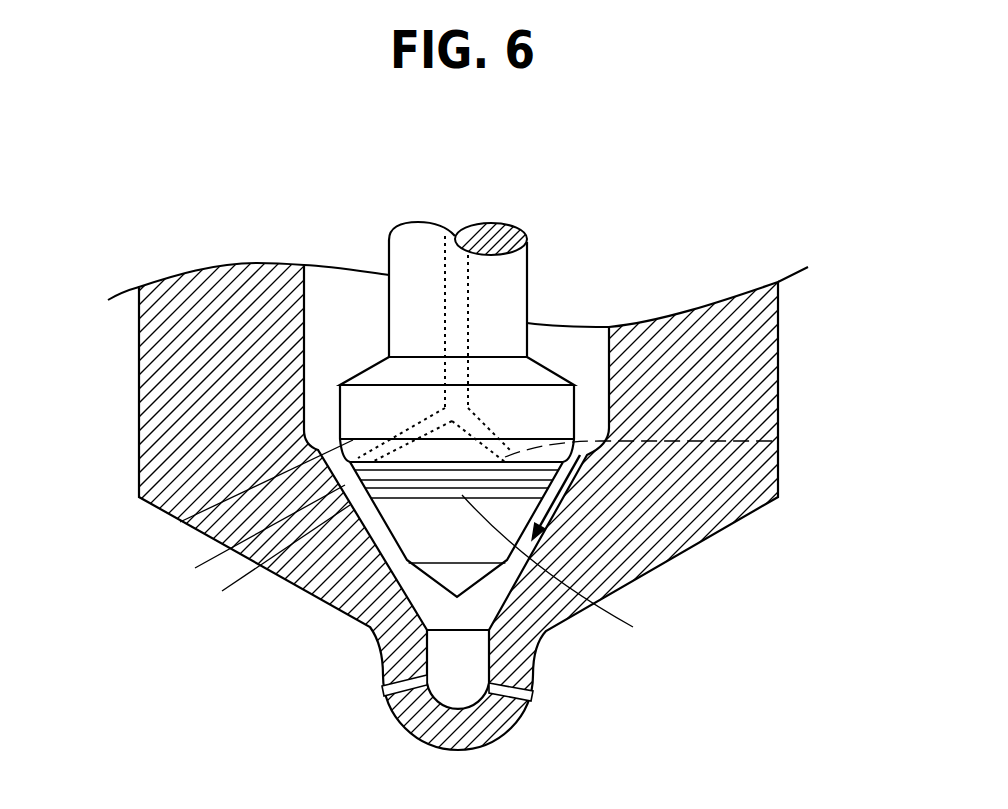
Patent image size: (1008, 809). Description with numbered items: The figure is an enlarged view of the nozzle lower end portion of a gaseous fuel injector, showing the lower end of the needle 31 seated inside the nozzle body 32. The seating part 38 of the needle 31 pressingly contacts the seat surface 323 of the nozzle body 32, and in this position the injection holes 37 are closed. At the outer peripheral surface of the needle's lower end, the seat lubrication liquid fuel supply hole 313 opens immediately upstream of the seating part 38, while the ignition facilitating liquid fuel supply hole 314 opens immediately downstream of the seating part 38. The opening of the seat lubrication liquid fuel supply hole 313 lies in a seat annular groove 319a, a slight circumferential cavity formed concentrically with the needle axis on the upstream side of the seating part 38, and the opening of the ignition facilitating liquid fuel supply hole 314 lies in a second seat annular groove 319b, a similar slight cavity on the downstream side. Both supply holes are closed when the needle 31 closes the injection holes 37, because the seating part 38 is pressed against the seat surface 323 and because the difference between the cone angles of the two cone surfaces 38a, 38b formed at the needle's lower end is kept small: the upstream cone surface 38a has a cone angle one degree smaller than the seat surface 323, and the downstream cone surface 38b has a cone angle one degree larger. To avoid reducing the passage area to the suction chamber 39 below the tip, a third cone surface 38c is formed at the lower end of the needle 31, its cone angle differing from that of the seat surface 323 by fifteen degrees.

The needle 31 is at (550, 280).
The nozzle body 32 is at (778, 328).
The seat lubrication liquid fuel supply hole 313 is at (352, 438).
The ignition facilitating liquid fuel supply hole 314 is at (778, 441).
The seat annular groove 319a is at (195, 568).
The seat annular groove 319b is at (633, 627).
The seat surface 323 is at (560, 507).
The injection holes 37 is at (533, 693).
The seating part 38 is at (222, 591).
The cone surface 38a is at (180, 522).
The cone surface 38b is at (317, 600).
The third cone surface 38c is at (380, 633).
The suction chamber 39 is at (457, 683).